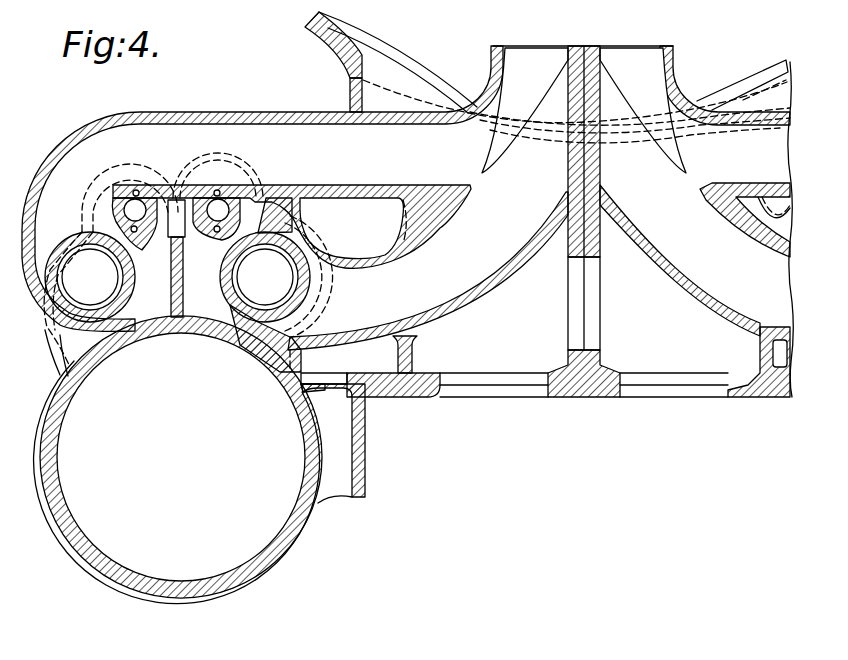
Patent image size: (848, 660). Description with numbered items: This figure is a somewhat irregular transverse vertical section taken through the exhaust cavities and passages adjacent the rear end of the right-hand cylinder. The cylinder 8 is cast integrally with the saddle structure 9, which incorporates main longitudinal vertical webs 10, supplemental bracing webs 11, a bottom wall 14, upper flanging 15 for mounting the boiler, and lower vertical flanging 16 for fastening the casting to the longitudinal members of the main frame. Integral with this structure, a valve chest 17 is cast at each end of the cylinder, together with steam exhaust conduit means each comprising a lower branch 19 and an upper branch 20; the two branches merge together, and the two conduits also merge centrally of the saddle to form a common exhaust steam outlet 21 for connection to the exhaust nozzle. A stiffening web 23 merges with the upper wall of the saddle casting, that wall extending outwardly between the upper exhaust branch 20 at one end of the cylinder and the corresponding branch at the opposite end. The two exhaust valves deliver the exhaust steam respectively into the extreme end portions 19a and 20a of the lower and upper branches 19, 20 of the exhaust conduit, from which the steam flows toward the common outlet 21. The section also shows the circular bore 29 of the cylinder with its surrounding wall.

The cylinder 8 is at (158, 594).
The saddle structure 9 is at (312, 36).
The main longitudinal vertical webs 10 is at (568, 244).
The supplemental bracing webs 11 is at (412, 350).
The bottom wall 14 is at (399, 398).
The upper flanging 15 is at (397, 74).
The lower vertical flanging 16 is at (365, 482).
The valve chest 17 is at (50, 343).
The lower branch of exhaust conduit 19 is at (524, 267).
The extreme end portion of lower exhaust branch 19a is at (281, 294).
The upper branch of exhaust conduit 20 is at (407, 221).
The extreme end portion of upper exhaust branch 20a is at (80, 218).
The common exhaust steam outlet 21 is at (542, 60).
The stiffening web 23 is at (350, 88).
The cylinder 29 is at (58, 467).